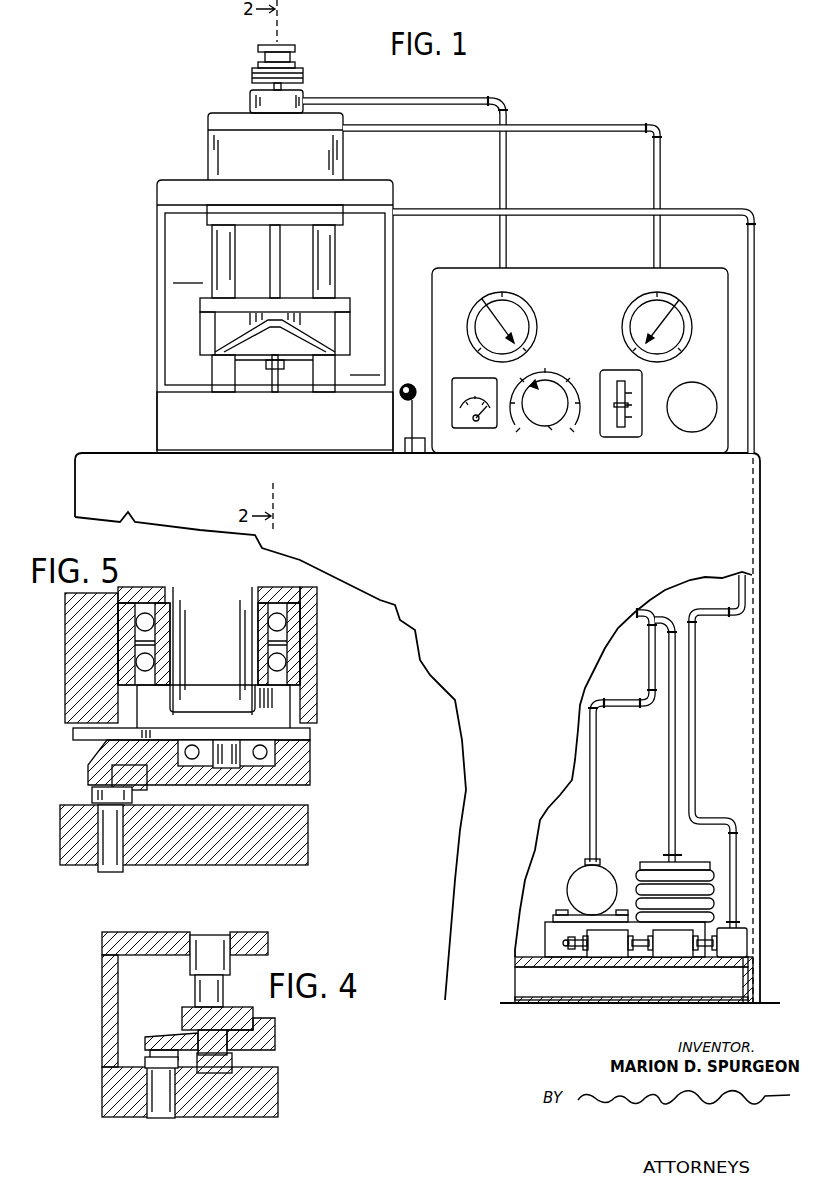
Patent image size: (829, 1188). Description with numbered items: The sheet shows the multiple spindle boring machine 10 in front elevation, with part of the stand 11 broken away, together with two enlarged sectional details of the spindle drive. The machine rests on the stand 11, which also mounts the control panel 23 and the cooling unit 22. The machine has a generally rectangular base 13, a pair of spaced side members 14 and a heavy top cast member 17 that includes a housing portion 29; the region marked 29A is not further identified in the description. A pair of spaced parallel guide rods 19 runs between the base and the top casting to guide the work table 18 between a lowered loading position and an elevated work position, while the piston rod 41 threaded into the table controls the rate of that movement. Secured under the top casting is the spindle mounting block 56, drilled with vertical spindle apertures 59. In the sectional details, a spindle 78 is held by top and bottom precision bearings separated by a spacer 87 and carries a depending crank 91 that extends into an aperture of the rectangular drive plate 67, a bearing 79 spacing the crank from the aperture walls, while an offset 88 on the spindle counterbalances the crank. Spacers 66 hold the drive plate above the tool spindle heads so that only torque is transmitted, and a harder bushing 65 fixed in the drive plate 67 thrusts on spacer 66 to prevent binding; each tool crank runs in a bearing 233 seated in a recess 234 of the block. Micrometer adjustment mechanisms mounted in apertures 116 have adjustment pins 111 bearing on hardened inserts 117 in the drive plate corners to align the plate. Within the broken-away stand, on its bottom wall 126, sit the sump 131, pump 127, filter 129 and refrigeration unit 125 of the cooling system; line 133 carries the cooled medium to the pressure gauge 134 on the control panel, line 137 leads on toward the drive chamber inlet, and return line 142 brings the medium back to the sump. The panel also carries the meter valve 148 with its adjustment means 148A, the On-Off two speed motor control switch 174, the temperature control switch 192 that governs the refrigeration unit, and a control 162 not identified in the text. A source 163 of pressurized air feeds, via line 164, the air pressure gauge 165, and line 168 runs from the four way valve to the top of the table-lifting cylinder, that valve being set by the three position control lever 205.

In FIG. 1, the multiple spindle boring machine 10 is at (155, 182).
In FIG. 1, the stand 11 is at (80, 486).
In FIG. 1, the base 13 is at (165, 412).
In FIG. 1, the side members 14 is at (162, 311).
In FIG. 1, the top cast member 17 is at (165, 192).
In FIG. 5, the top cast member 17 is at (318, 684).
In FIG. 4, the top cast member 17 is at (258, 945).
In FIG. 1, the work table 18 is at (253, 347).
In FIG. 1, the guide rods 19 is at (326, 266).
In FIG. 1, the cooling unit 22 is at (566, 882).
In FIG. 1, the control panel 23 is at (437, 273).
In FIG. 1, the housing portion 29 is at (330, 163).
In FIG. 1, the cylinder portion 29A is at (278, 320).
In FIG. 1, the piston rod 41 is at (276, 370).
In FIG. 1, the spindle mounting block 56 is at (226, 213).
In FIG. 5, the spindle mounting block 56 is at (213, 845).
In FIG. 5, the spindle apertures 59 is at (123, 845).
In FIG. 4, the spindle apertures 59 is at (172, 1100).
In FIG. 4, the bushing 65 is at (275, 1040).
In FIG. 4, the spacers 66 is at (212, 1075).
In FIG. 5, the drive plate 67 is at (302, 753).
In FIG. 4, the drive plate 67 is at (250, 1047).
In FIG. 5, the spindle 78 is at (219, 659).
In FIG. 5, the bearing 79 is at (285, 737).
In FIG. 5, the spacer 87 is at (176, 590).
In FIG. 5, the offset 88 is at (195, 734).
In FIG. 5, the crank 91 is at (228, 758).
In FIG. 4, the adjustment pin 111 is at (193, 993).
In FIG. 4, the aperture 116 is at (205, 945).
In FIG. 4, the hardened insert 117 is at (188, 1018).
In FIG. 1, the refrigeration unit 125 is at (660, 862).
In FIG. 1, the bottom wall 126 is at (560, 962).
In FIG. 1, the pump 127 is at (667, 947).
In FIG. 1, the filter 129 is at (608, 947).
In FIG. 1, the sump 131 is at (746, 943).
In FIG. 1, the line 133 is at (677, 720).
In FIG. 1, the pressure gauge 134 is at (519, 303).
In FIG. 1, the line 137 is at (438, 100).
In FIG. 1, the return line 142 is at (545, 212).
In FIG. 1, the meter valve 148 is at (556, 372).
In FIG. 1, the adjustment means 148A is at (552, 432).
In FIG. 1, the push button 162 is at (718, 400).
In FIG. 1, the source of pressurized air 163 is at (568, 900).
In FIG. 1, the line 164 is at (593, 800).
In FIG. 1, the air pressure gauge 165 is at (684, 313).
In FIG. 1, the line 168 is at (534, 128).
In FIG. 1, the On-Off two speed motor control switch 174 is at (476, 428).
In FIG. 1, the temperature control switch 192 is at (641, 402).
In FIG. 1, the control lever 205 is at (409, 383).
In FIG. 5, the bearing 233 is at (148, 770).
In FIG. 5, the recess 234 is at (100, 790).